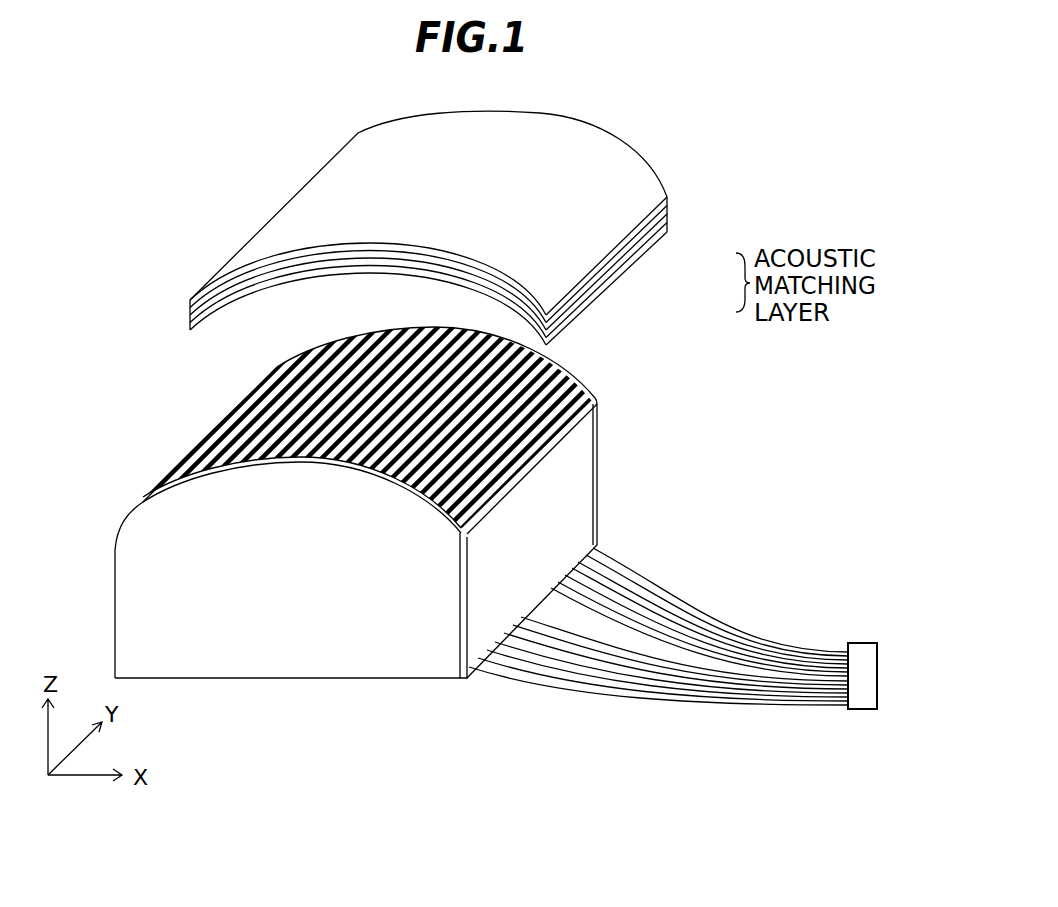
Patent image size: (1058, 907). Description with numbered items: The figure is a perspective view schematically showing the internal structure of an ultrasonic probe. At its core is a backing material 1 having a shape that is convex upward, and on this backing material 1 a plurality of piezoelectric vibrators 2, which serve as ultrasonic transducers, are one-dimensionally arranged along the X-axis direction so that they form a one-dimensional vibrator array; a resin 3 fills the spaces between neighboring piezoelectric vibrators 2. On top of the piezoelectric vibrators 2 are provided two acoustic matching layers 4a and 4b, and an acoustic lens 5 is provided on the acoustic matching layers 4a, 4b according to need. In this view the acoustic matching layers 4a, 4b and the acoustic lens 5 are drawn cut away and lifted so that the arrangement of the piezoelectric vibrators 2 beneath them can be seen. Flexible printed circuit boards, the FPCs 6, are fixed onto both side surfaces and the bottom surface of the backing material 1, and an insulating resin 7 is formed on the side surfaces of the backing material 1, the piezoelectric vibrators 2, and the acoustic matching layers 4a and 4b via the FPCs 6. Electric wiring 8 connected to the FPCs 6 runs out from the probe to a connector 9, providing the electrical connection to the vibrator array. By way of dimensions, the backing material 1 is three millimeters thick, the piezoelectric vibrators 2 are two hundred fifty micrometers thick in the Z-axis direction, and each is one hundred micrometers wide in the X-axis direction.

The backing material 1 is at (577, 525).
The piezoelectric vibrators 2 is at (568, 395).
The resin 3 is at (553, 375).
The acoustic matching layer 4a is at (645, 247).
The acoustic matching layer 4b is at (658, 232).
The acoustic lens 5 is at (668, 205).
The flexible printed circuit boards (FPCs) 6 is at (465, 668).
The insulating resin 7 is at (185, 667).
The electric wiring 8 is at (663, 602).
The connector 9 is at (855, 710).